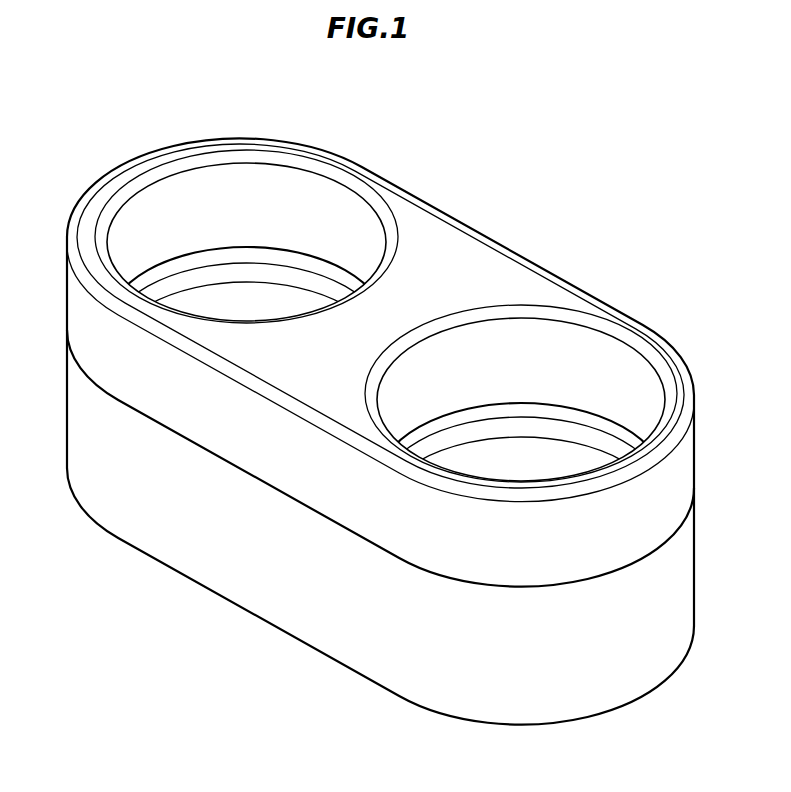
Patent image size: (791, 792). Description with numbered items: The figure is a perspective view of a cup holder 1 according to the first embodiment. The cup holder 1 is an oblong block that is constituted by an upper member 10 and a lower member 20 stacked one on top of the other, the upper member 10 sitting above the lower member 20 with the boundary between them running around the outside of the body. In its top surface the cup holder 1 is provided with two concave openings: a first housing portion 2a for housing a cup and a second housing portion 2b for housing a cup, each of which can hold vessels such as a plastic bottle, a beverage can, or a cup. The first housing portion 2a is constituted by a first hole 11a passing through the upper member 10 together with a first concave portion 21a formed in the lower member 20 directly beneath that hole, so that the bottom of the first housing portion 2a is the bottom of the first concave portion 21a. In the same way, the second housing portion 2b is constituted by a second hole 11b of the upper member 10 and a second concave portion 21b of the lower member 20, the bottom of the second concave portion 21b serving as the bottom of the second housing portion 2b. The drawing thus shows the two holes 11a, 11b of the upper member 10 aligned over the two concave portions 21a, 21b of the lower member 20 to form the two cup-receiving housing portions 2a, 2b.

The cup holder 1 is at (555, 127).
The upper member 10 is at (686, 483).
The lower member 20 is at (686, 603).
The first housing portion 2a is at (246, 262).
The second housing portion 2b is at (534, 424).
The first hole 11a is at (230, 163).
The second hole 11b is at (588, 327).
The first concave portion 21a is at (277, 300).
The second concave portion 21b is at (518, 455).